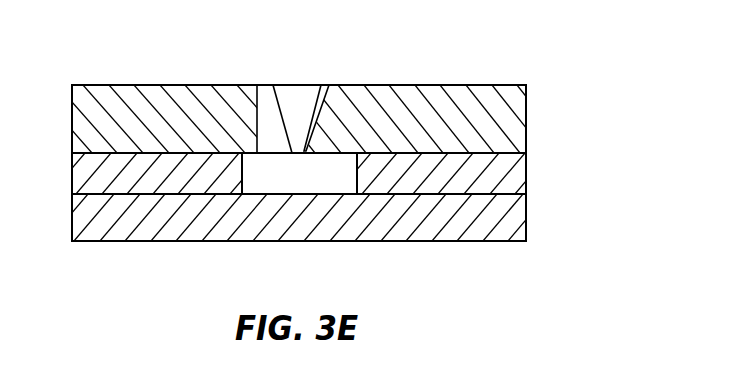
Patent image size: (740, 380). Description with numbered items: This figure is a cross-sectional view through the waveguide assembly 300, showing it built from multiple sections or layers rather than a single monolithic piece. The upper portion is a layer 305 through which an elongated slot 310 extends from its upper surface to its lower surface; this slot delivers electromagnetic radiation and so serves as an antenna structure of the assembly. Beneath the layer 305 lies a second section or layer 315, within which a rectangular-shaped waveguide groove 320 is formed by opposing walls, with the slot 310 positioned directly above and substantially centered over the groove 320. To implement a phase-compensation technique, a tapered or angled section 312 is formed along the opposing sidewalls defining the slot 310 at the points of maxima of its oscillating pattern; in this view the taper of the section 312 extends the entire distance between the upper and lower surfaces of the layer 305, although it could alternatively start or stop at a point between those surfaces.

The waveguide assembly 300 is at (544, 77).
The layer 305 is at (472, 97).
The elongated slot 310 is at (286, 79).
The tapered section 312 is at (316, 107).
The layer 315 is at (540, 153).
The waveguide groove 320 is at (299, 173).